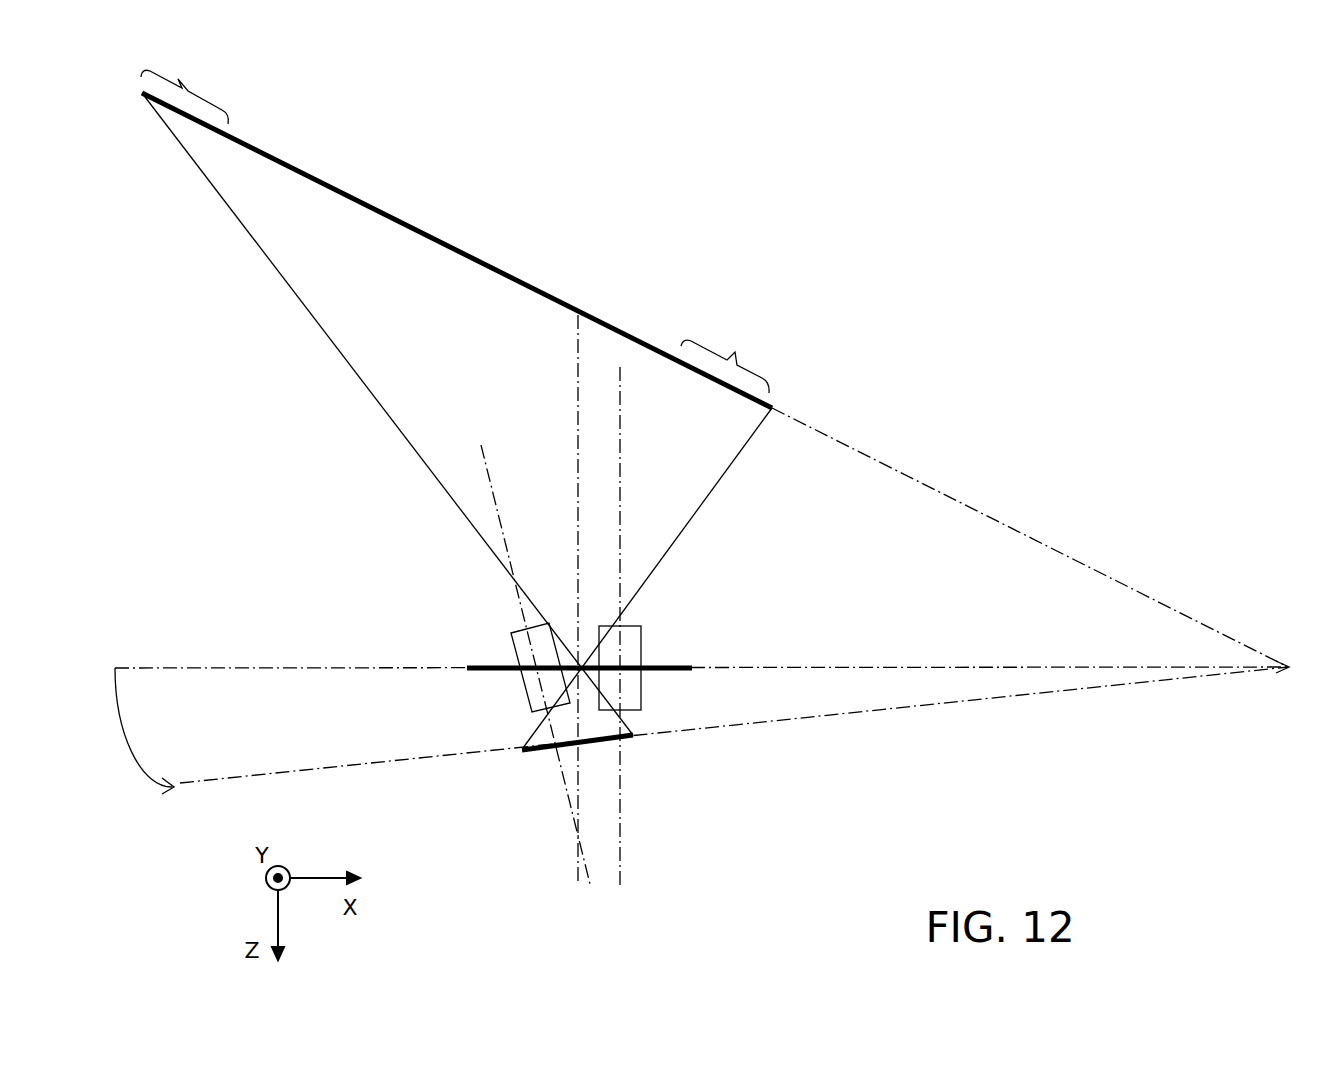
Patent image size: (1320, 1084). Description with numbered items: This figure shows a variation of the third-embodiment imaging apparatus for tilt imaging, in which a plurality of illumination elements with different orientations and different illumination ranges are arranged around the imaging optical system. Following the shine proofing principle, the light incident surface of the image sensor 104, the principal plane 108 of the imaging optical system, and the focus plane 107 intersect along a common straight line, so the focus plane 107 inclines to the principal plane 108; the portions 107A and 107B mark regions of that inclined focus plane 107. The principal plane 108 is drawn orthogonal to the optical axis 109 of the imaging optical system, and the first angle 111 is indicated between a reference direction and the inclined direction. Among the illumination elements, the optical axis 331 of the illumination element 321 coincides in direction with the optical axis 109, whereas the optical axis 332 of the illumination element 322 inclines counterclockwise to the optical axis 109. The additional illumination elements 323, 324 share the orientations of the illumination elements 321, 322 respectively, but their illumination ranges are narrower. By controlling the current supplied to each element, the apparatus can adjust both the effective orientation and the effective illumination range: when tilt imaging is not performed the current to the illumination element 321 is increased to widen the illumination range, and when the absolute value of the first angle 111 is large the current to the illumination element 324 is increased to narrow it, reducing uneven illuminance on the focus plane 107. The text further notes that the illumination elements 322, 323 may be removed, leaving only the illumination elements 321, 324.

The image sensor 104 is at (556, 752).
The focus plane 107 is at (384, 208).
The first portion of reflector 107A is at (726, 353).
The second portion of reflector 107B is at (185, 82).
The principal plane 108 is at (498, 673).
The optical axis 109 is at (578, 410).
The first angle 111 is at (196, 731).
The illumination element 321 is at (693, 668).
The illumination element 323 is at (635, 640).
The illumination element 322 is at (470, 667).
The illumination element 324 is at (520, 645).
The optical axis 331 is at (622, 440).
The optical axis 332 is at (497, 502).